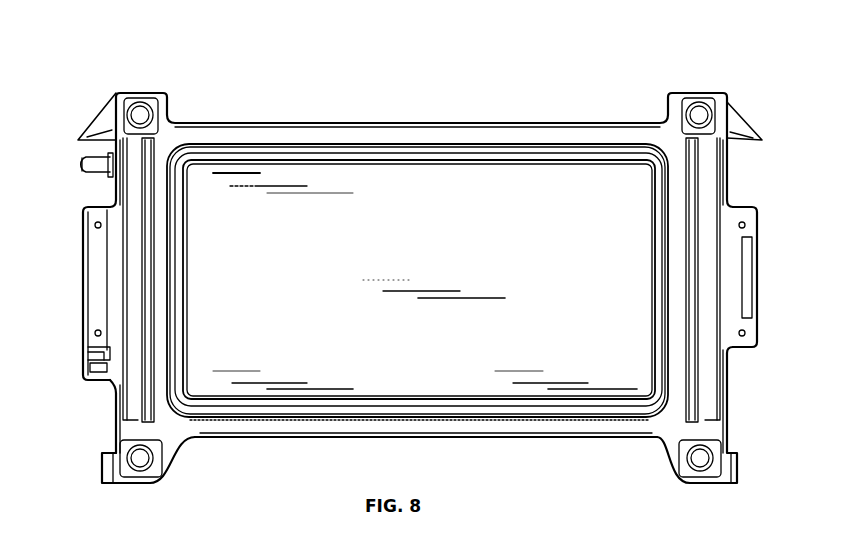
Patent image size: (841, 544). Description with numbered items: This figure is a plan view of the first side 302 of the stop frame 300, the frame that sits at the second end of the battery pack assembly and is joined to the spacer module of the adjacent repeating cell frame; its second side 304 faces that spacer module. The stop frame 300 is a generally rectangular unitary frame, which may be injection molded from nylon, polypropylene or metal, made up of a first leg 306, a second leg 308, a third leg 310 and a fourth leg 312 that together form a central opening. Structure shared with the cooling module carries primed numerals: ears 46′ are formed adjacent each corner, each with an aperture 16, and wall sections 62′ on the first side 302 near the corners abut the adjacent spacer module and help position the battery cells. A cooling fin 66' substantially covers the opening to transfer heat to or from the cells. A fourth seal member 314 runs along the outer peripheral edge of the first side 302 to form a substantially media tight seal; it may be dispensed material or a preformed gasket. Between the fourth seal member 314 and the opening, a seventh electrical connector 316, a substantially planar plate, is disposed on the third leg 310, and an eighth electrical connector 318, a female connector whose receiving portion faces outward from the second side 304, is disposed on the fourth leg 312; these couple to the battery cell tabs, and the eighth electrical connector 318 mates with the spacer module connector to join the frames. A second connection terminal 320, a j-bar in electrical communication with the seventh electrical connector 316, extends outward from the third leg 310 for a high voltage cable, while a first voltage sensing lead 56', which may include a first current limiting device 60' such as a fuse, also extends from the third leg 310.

The stop frame 300 is at (728, 58).
The aperture 16 is at (141, 113).
The ear 46′ is at (131, 93).
The second connection terminal 320 is at (78, 162).
The wall section 62′ is at (115, 181).
The third leg 310 is at (110, 194).
The seventh electrical connector 316 is at (100, 281).
The first current limiting device 60' is at (77, 354).
The first voltage sensing lead 56' is at (91, 389).
The fourth seal member 314 is at (183, 440).
The second leg 308 is at (338, 438).
The first side 302 is at (502, 425).
The second side 304 is at (563, 425).
The first leg 306 is at (412, 123).
The cooling fin 66' is at (425, 240).
The fourth leg 312 is at (727, 380).
The eighth electrical connector 318 is at (737, 281).